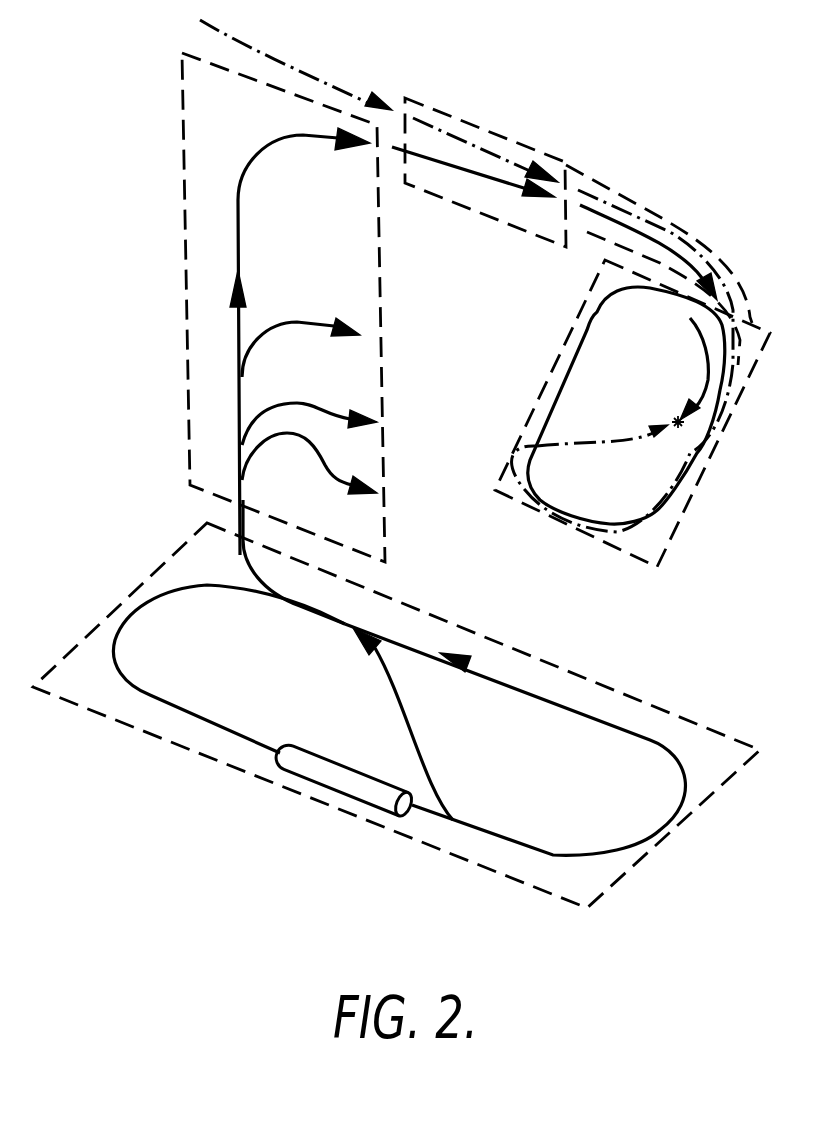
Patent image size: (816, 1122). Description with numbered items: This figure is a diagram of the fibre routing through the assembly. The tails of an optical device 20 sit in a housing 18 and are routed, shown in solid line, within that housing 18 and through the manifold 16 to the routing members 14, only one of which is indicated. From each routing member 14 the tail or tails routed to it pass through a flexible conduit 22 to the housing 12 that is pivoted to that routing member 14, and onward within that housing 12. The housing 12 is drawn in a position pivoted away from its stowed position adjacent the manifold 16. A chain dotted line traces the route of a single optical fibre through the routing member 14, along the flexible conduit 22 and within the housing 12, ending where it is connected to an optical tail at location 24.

The housing 12 is at (670, 542).
The routing member 14 is at (513, 140).
The manifold 16 is at (185, 412).
The housing 18 is at (396, 704).
The optical device 20 is at (328, 773).
The flexible conduit 22 is at (673, 227).
The location 24 is at (680, 425).